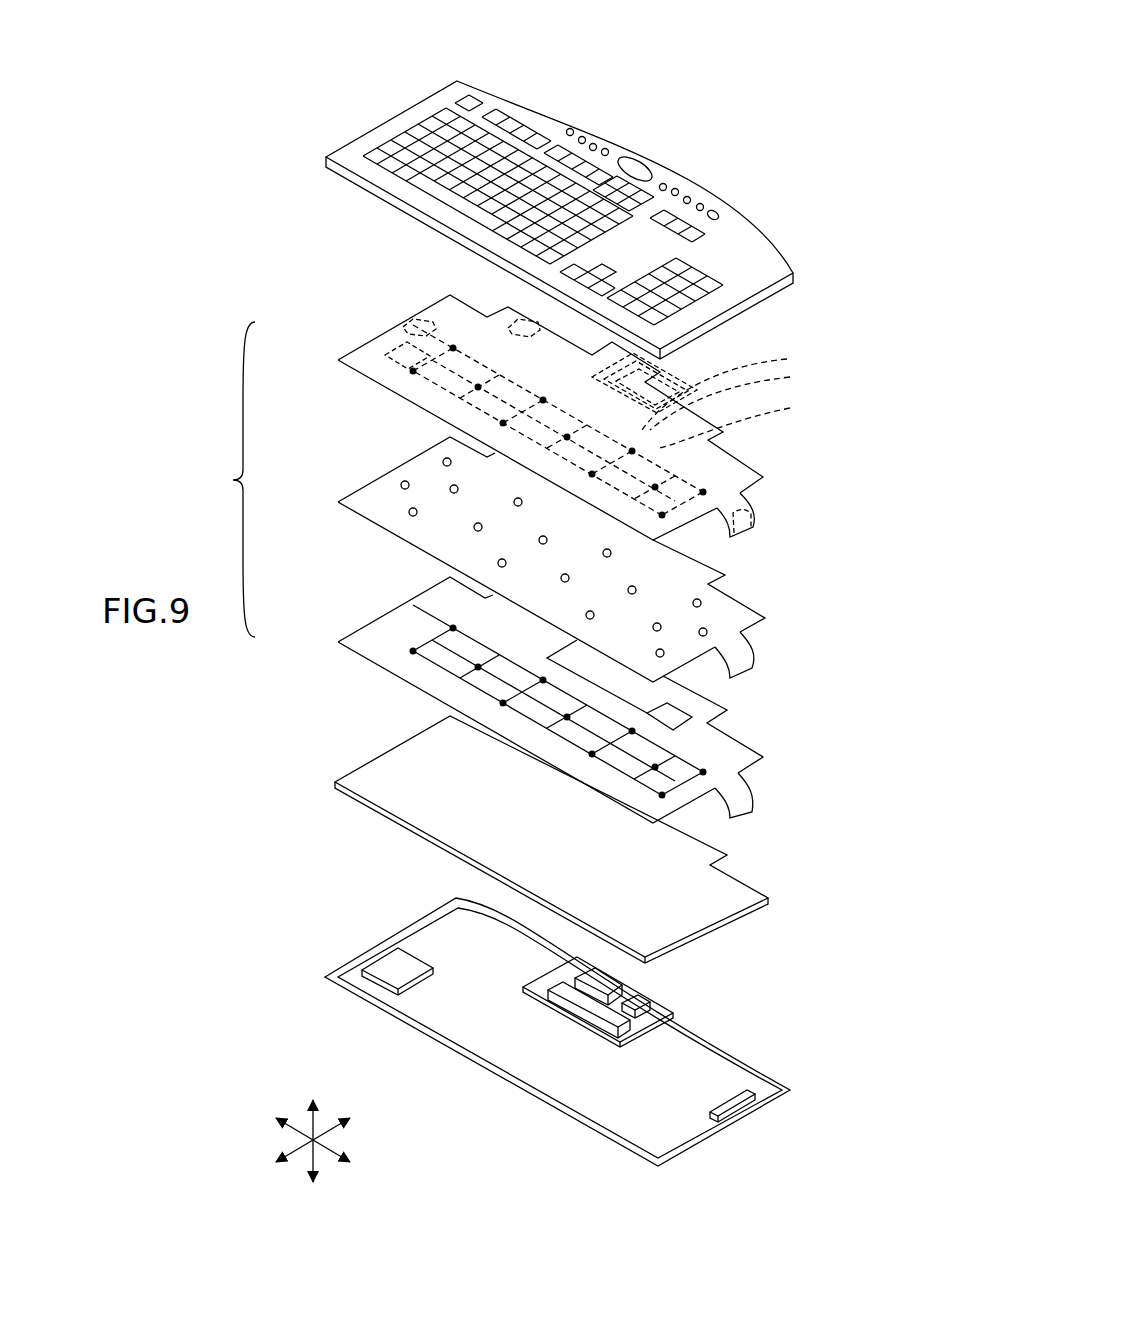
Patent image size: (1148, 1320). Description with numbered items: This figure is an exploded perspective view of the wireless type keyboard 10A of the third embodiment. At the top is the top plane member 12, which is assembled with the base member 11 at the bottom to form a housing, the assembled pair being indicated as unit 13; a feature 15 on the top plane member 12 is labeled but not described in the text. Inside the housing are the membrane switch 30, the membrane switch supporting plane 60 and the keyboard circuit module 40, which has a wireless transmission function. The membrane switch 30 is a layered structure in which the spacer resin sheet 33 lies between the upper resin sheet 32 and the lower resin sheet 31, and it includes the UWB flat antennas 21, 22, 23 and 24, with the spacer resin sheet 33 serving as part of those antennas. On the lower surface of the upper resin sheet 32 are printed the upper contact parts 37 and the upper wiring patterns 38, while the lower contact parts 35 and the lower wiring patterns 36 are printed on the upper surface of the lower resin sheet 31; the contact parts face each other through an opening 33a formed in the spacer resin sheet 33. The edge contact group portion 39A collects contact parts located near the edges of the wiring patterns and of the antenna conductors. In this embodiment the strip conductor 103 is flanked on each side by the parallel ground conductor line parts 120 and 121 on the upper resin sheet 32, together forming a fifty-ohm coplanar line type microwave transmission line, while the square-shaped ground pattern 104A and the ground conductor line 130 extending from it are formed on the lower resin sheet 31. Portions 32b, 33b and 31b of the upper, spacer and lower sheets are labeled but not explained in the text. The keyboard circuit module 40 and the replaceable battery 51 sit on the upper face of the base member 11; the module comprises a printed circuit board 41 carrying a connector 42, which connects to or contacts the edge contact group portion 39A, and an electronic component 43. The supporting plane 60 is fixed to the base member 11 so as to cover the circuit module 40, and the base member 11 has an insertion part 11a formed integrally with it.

The keyboard 10A is at (835, 27).
The indicator lamps 15 is at (537, 160).
The keyboard unit (11+12) 13 is at (592, 210).
The top plane member 12 is at (770, 252).
The UWB flat antenna 24 is at (405, 314).
The UWB flat antenna 22 is at (526, 308).
The upper resin sheet 32 is at (332, 341).
The membrane switch 30 is at (547, 538).
The edge contact group portion 39A is at (648, 372).
The ground conductor line part 120 is at (743, 386).
The strip conductor 103 is at (770, 395).
The UWB flat antenna 21 is at (703, 410).
The ground conductor line part 121 is at (753, 422).
The upper wiring pattern 38 is at (447, 390).
The upper contact part 37 is at (498, 423).
The spacer resin sheet 33 is at (332, 477).
The tail portion of upper sheet 32b is at (758, 503).
The opening 33a is at (412, 514).
The UWB flat antenna 23 is at (767, 537).
The lower resin sheet 31 is at (332, 617).
The tail portion of spacer sheet 33b is at (752, 647).
The ground conductor line 130 is at (630, 700).
The ground pattern 104A is at (690, 698).
The lower wiring pattern 36 is at (448, 633).
The lower contact part 35 is at (500, 705).
The tail portion of lower sheet 31b is at (753, 790).
The membrane switch supporting plane 60 is at (720, 884).
The electronic component 43 is at (558, 982).
The battery 51 is at (392, 960).
The connector 42 is at (615, 978).
The keyboard circuit module 40 is at (662, 996).
The printed circuit board 41 is at (647, 1023).
The base member 11 is at (790, 1092).
The insertion part 11a is at (747, 1112).